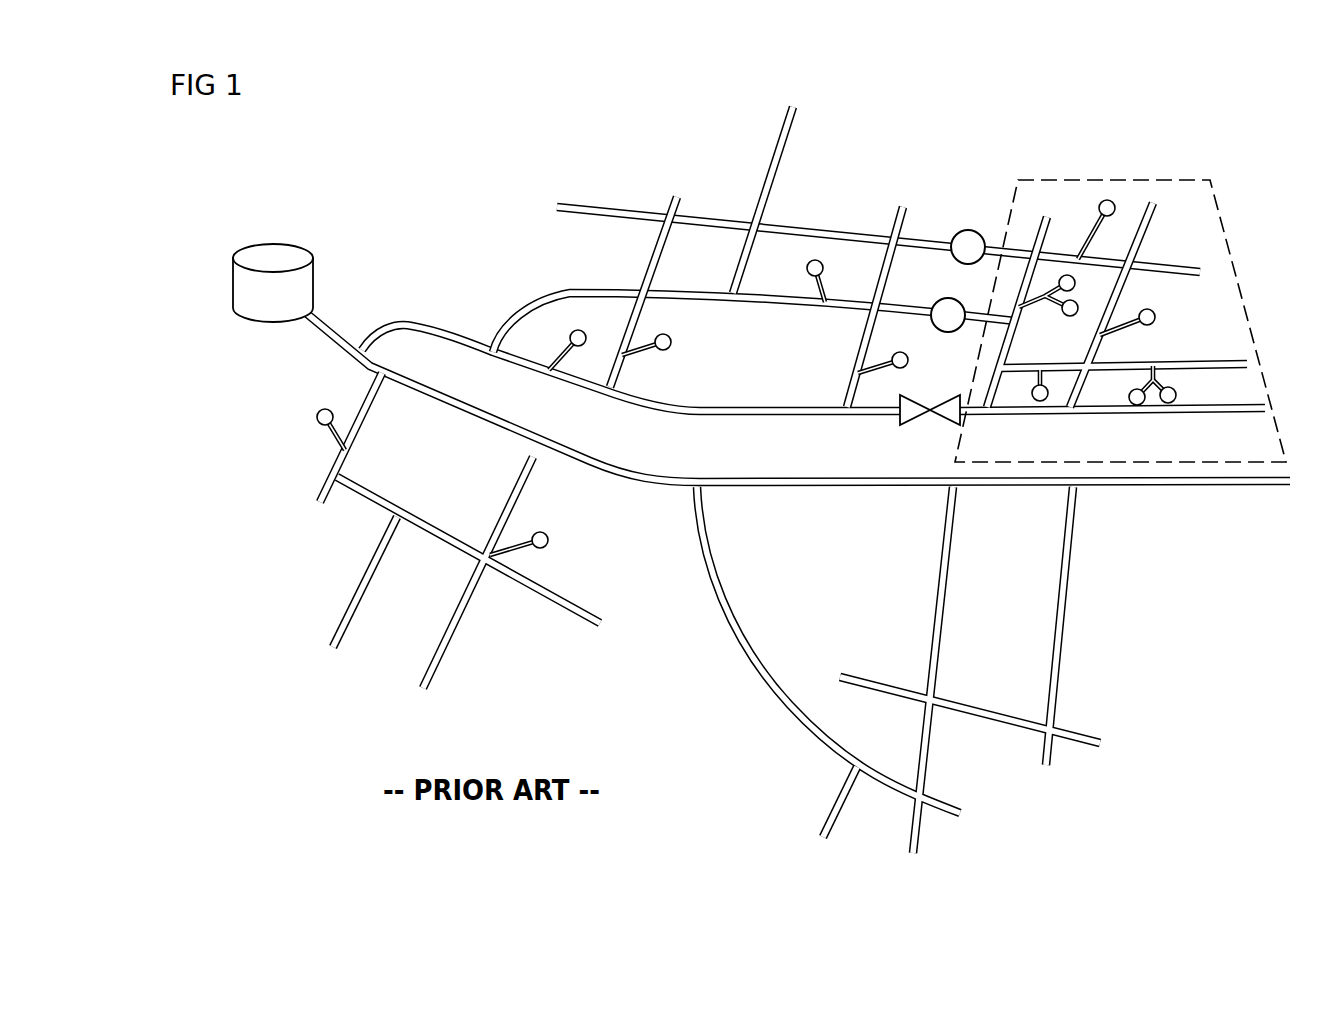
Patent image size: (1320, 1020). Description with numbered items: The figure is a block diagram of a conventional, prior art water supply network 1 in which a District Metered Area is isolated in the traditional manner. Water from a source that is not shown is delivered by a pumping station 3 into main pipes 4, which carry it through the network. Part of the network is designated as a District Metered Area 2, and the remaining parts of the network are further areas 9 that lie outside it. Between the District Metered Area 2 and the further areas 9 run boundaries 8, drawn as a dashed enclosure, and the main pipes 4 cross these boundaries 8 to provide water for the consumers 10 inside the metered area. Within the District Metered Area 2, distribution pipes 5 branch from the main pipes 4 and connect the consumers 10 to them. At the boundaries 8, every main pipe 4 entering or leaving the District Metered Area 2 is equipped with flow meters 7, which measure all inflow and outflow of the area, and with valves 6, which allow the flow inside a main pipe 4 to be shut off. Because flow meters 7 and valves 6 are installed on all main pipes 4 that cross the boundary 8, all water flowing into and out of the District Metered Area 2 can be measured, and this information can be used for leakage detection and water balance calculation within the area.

The water supply network 1 is at (400, 181).
The District Metered Area 2 is at (1228, 196).
The pumping station 3 is at (240, 290).
The main pipes 4 is at (562, 290).
The distribution pipes 5 is at (330, 440).
The valves 6 is at (897, 418).
The flow meters 7 is at (952, 255).
The boundaries 8 is at (1050, 178).
The further areas 9 is at (704, 167).
The consumers 10 is at (318, 410).